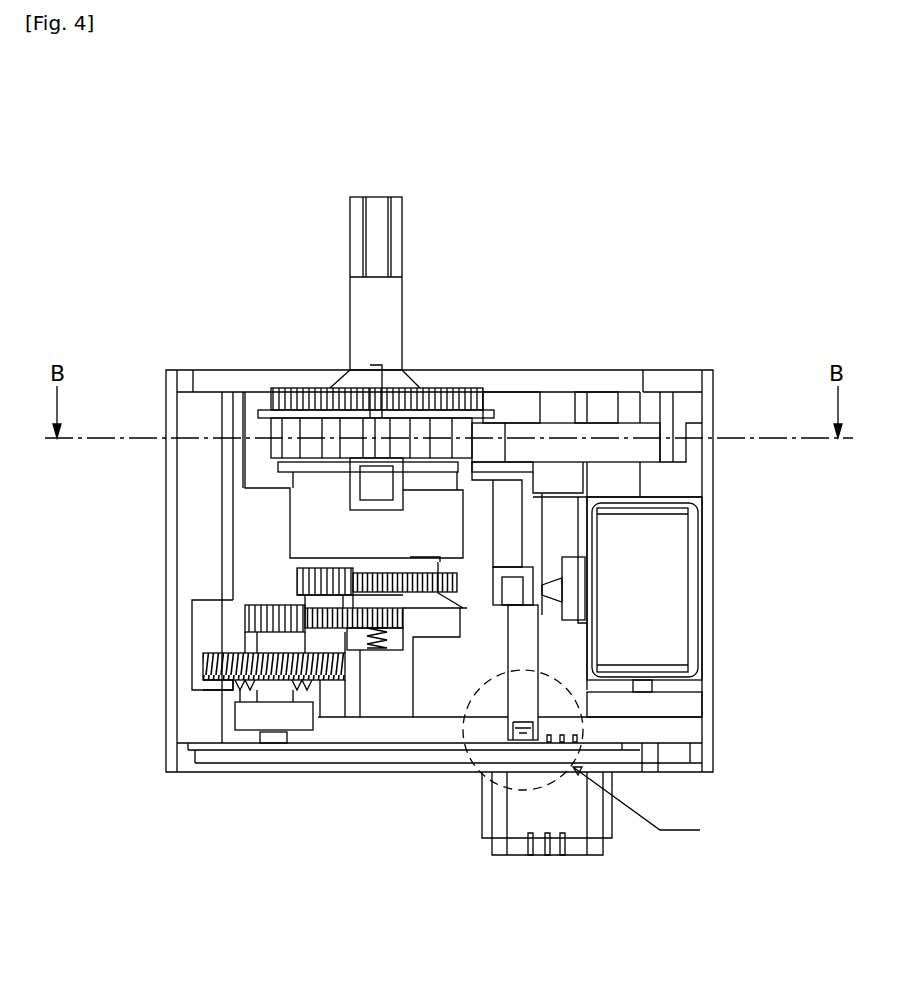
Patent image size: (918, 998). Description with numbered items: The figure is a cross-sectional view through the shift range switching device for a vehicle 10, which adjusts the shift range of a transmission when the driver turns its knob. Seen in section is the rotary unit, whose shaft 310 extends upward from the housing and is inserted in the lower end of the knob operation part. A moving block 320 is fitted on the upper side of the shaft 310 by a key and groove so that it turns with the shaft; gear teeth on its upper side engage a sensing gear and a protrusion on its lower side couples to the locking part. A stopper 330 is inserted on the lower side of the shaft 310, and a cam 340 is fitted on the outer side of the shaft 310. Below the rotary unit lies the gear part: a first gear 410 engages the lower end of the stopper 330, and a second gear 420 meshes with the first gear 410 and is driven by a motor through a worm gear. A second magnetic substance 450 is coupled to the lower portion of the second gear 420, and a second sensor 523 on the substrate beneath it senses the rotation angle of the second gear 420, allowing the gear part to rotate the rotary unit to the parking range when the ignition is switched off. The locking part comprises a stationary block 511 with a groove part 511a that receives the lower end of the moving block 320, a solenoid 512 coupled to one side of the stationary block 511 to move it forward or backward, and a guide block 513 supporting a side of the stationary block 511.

The shift range switching device for a vehicle 10 is at (280, 112).
The shaft 310 is at (396, 297).
The moving block 320 is at (303, 397).
The stopper 330 is at (325, 563).
The cam 340 is at (308, 515).
The first gear 410 is at (300, 583).
The second gear 420 is at (220, 672).
The second magnetic substance 450 is at (247, 720).
The stationary block 511 is at (527, 530).
The groove part 511a is at (493, 430).
The solenoid 512 is at (622, 608).
The guide block 513 is at (693, 453).
The second sensor 523 is at (277, 740).